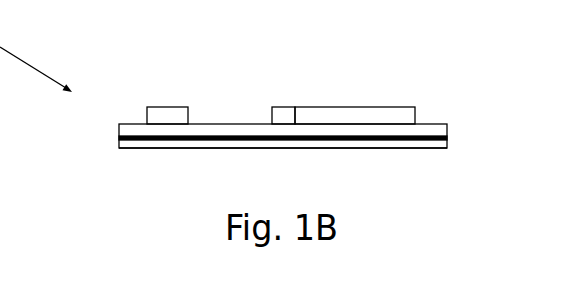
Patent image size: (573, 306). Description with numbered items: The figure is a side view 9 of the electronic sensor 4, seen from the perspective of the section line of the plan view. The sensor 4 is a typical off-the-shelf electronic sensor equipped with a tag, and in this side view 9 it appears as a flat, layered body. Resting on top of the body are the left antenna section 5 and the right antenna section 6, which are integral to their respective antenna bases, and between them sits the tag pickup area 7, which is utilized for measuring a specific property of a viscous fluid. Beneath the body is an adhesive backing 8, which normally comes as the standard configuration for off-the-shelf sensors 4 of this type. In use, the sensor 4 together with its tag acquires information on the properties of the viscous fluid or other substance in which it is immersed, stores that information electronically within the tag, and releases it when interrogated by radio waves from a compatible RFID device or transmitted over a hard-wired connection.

The sensor 4 is at (448, 127).
The left antenna section 5 is at (165, 110).
The right antenna section 6 is at (382, 108).
The tag pickup area 7 is at (285, 102).
The adhesive backing 8 is at (448, 147).
The side view 9 is at (117, 177).